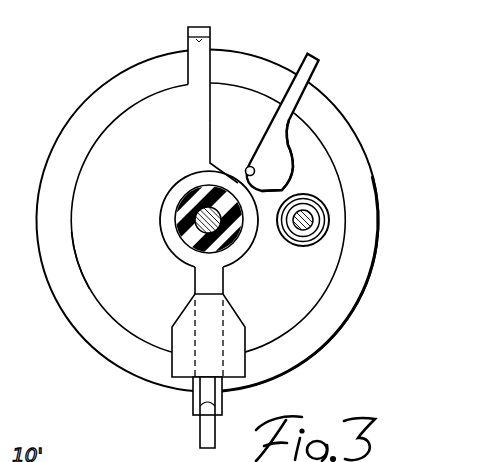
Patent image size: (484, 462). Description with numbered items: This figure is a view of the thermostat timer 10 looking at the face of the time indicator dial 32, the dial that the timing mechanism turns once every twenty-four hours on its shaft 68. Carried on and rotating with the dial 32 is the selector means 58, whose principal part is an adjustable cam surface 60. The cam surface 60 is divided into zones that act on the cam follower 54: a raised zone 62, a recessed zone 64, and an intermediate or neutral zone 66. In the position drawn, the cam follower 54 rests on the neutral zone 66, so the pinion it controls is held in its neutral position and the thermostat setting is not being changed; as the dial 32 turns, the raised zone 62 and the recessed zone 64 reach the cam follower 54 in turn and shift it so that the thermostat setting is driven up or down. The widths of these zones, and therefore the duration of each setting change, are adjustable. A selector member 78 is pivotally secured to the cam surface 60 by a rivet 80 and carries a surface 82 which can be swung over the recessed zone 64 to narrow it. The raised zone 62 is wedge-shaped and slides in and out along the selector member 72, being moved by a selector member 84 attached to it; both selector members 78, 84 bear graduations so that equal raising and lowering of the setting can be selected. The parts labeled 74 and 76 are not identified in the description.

The thermostat timer 10 is at (212, 35).
The selector means 58 is at (121, 110).
The time indicator dial 32 is at (330, 115).
The adjustable cam surface 60 is at (107, 180).
The neutral zone 66 is at (88, 271).
The recessed zone 64 is at (249, 102).
The hub 74 is at (177, 243).
The bushing 76 is at (180, 217).
The shaft 68 is at (208, 211).
The selector member 78 is at (316, 68).
The surface 82 is at (278, 149).
The rivet 80 is at (250, 166).
The cam follower 54 is at (322, 217).
The raised zone 62 is at (182, 324).
The selector member 72 is at (196, 403).
The selector member 84 is at (203, 427).